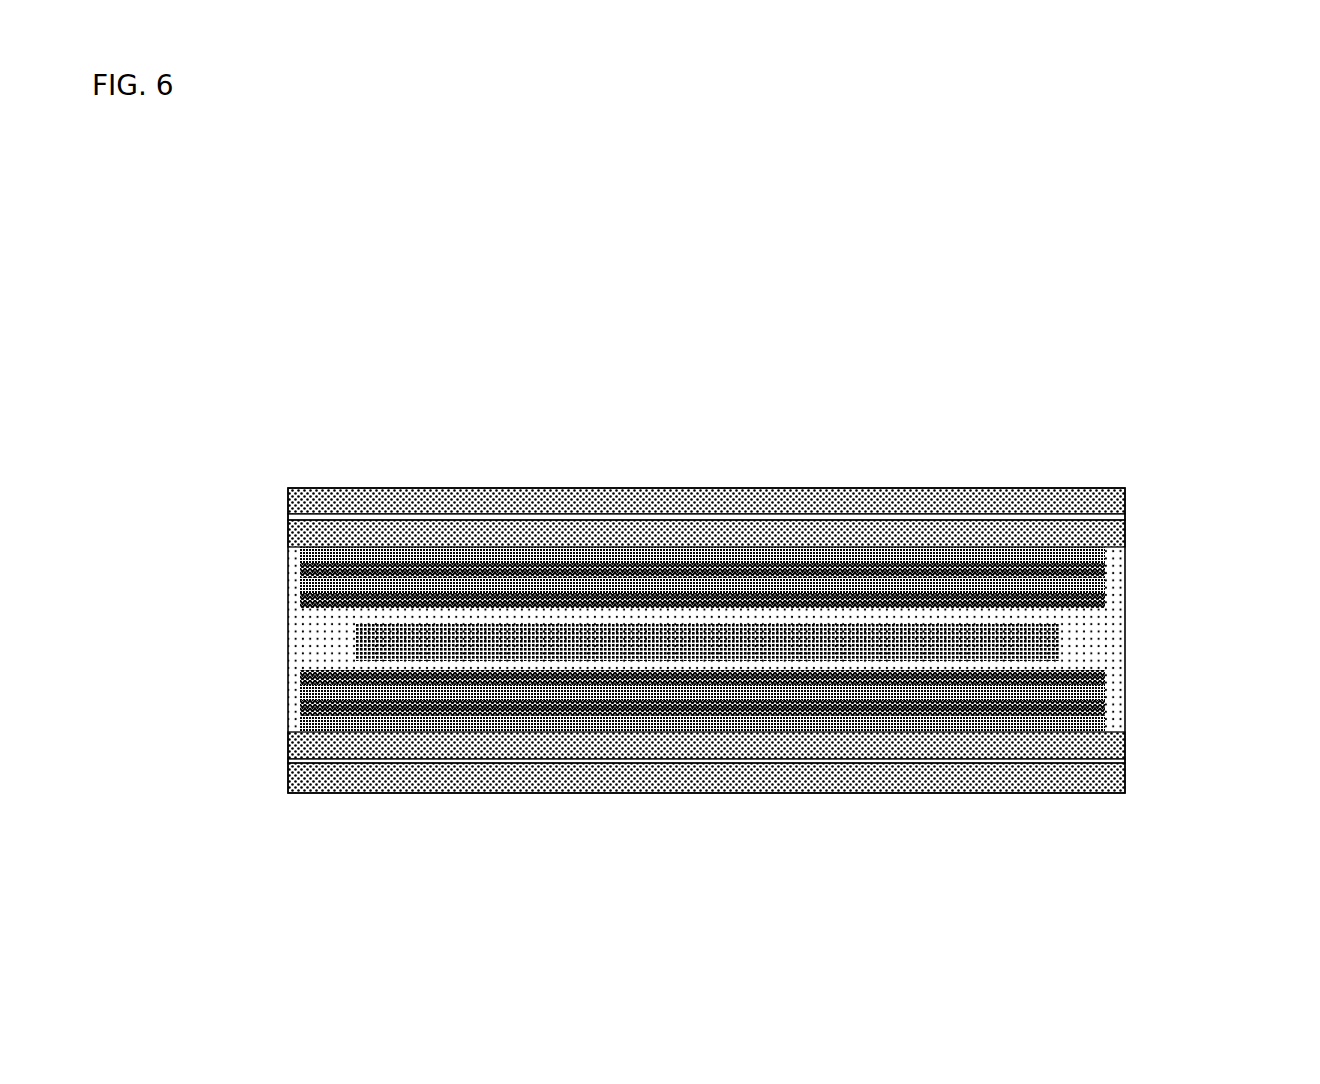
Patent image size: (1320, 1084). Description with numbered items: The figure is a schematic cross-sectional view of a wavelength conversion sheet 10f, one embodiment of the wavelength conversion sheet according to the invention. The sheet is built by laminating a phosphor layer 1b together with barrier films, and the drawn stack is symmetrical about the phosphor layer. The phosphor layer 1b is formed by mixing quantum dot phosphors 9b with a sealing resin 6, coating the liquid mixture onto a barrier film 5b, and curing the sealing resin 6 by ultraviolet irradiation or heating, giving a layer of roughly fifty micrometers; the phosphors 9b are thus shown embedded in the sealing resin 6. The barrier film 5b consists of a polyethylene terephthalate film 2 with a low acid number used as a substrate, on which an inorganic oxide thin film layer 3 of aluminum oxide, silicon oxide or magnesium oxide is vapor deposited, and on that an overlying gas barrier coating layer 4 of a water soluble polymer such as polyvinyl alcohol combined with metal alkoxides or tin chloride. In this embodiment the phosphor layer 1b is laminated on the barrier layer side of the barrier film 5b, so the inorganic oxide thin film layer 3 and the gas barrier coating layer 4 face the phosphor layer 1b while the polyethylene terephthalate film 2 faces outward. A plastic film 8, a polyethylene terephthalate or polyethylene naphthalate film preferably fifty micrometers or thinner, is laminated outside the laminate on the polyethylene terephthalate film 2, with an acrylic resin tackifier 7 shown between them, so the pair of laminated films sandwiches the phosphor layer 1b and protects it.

The wavelength conversion sheet 10f is at (293, 320).
The plastic film 8 is at (284, 498).
The acrylic resin tackifier 7 is at (931, 517).
The polyethylene terephthalate film 2 is at (362, 527).
The inorganic oxide thin film layer 3 is at (507, 547).
The gas barrier coating layer 4 is at (866, 599).
The barrier film 5b is at (1140, 520).
The sealing resin 6 is at (1113, 638).
The phosphor 9b is at (1008, 638).
The phosphor layer 1b is at (1227, 697).